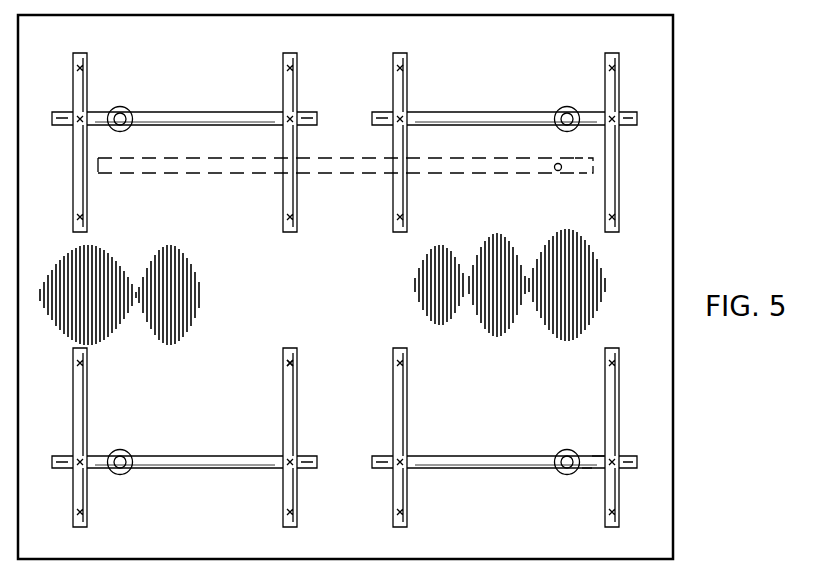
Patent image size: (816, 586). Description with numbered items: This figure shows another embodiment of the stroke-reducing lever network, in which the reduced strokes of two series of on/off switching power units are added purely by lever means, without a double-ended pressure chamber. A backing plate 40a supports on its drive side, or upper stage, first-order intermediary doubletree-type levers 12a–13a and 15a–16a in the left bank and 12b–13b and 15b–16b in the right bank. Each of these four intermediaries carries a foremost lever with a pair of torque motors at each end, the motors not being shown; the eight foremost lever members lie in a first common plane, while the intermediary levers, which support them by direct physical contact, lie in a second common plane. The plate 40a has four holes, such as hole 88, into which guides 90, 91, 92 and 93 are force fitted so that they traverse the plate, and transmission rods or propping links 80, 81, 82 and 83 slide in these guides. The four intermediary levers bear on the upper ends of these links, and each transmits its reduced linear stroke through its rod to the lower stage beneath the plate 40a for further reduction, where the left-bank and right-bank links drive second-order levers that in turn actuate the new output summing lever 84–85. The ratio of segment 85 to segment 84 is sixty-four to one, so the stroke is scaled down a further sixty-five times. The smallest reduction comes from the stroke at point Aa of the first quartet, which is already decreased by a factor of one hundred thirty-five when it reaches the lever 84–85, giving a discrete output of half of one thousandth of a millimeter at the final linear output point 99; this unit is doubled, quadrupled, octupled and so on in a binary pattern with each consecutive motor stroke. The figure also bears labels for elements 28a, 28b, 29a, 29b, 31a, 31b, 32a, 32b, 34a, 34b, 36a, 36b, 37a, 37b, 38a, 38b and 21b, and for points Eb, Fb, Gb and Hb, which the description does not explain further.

The first-order intermediary lever 12a is at (175, 121).
The first-order intermediary lever 12b is at (478, 118).
The first-order intermediary lever 13a is at (95, 117).
The first-order intermediary lever 13b is at (593, 118).
The first-order intermediary lever 15a is at (90, 458).
The first-order intermediary lever 15b is at (596, 460).
The first-order intermediary lever 16a is at (217, 457).
The first-order intermediary lever 16b is at (442, 466).
The joint b 21b is at (610, 450).
The upper support member 28a is at (290, 403).
The upper support member 28b is at (400, 387).
The lower support member 29a is at (290, 493).
The lower support member 29b is at (400, 494).
The lower support member 31a is at (291, 197).
The lower support member 31b is at (394, 147).
The upper support member 32a is at (291, 92).
The upper support member 32b is at (404, 95).
The upper support member 34a is at (79, 383).
The upper support member 34b is at (612, 390).
The lower support member 36a is at (79, 490).
The lower support member 36b is at (612, 492).
The lower support member 37a is at (79, 168).
The lower support member 37b is at (611, 165).
The upper support member 38a is at (79, 76).
The upper support member 38b is at (611, 96).
The backing plate 40a is at (391, 283).
The transmission rod 80 is at (125, 473).
The transmission rod 81 is at (127, 130).
The transmission rod 82 is at (562, 473).
The transmission rod 83 is at (566, 131).
The output summing lever segment 84 is at (163, 174).
The output summing lever segment 85 is at (582, 173).
The hole 88 is at (585, 470).
The guide 90 is at (128, 451).
The guide 91 is at (128, 108).
The guide 92 is at (560, 450).
The guide 93 is at (568, 106).
The final linear output point 99 is at (556, 171).
The stroke point Aa is at (283, 356).
The point E Eb is at (406, 215).
The point F Fb is at (405, 60).
The point G Gb is at (617, 220).
The point H Hb is at (615, 62).